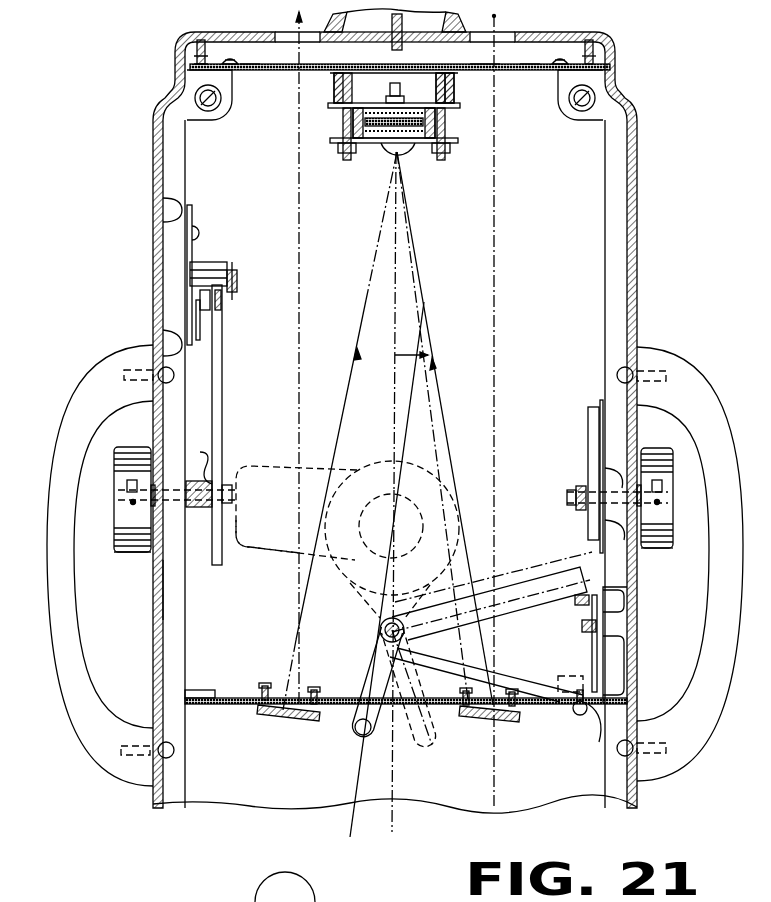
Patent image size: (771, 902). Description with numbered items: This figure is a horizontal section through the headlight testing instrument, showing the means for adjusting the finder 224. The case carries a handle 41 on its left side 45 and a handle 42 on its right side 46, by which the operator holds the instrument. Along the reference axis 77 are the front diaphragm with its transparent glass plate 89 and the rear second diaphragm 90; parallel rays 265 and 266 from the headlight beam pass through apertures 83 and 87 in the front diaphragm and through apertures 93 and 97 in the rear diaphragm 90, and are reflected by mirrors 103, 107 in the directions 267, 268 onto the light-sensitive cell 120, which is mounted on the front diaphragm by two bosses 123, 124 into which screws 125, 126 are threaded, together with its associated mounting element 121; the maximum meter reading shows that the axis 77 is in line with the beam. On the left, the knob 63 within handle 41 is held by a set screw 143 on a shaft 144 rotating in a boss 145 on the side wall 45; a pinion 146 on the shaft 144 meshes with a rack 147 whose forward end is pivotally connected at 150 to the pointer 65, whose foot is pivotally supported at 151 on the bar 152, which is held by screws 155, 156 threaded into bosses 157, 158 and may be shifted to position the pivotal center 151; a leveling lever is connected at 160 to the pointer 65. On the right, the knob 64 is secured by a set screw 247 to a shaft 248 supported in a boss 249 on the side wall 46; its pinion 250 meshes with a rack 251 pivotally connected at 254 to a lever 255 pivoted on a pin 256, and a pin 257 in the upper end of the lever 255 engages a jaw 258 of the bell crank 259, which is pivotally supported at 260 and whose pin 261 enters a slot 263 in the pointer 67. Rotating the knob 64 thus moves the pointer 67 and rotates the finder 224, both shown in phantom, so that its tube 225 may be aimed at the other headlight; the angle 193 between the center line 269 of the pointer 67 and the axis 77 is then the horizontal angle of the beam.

The handle 41 is at (56, 440).
The handle 42 is at (708, 394).
The left side 45 is at (160, 588).
The right side 46 is at (632, 584).
The knob 63 is at (118, 542).
The knob 64 is at (672, 550).
The pointer 65 is at (226, 306).
The pointer 67 is at (400, 771).
The reference axis 77 is at (396, 306).
The aperture 83 is at (282, 70).
The aperture 87 is at (502, 72).
The transparent glass plate 89 is at (474, 64).
The second diaphragm 90 is at (222, 704).
The aperture 93 is at (268, 696).
The aperture 97 is at (506, 688).
The mirror 103 is at (292, 722).
The mirror 107 is at (500, 722).
The light-sensitive cell 120 is at (436, 124).
The mounting bolts 121 is at (450, 146).
The boss 123 is at (334, 96).
The boss 124 is at (454, 96).
The screw 125 is at (334, 78).
The screw 126 is at (454, 78).
The set screw 143 is at (128, 520).
The shaft 144 is at (232, 478).
The boss 145 is at (194, 462).
The pinion 146 is at (200, 480).
The rack 147 is at (224, 412).
The pivotal connection 150 is at (194, 298).
The pivotal center 151 is at (228, 268).
The bar 152 is at (193, 250).
The screw 155 is at (196, 322).
The screw 156 is at (194, 232).
The boss 157 is at (180, 332).
The boss 158 is at (176, 210).
The connection 160 is at (238, 286).
The angle 193 is at (398, 352).
The finder 224 is at (382, 460).
The tube 225 is at (270, 556).
The set screw 247 is at (673, 520).
The shaft 248 is at (568, 500).
The boss 249 is at (606, 478).
The pinion 250 is at (608, 528).
The rack 251 is at (588, 432).
The pivotal connection 254 is at (572, 600).
The lever 255 is at (594, 646).
The pin 256 is at (580, 626).
The pin 257 is at (594, 735).
The jaw 258 is at (572, 708).
The bell crank 259 is at (472, 656).
The pivot 260 is at (380, 630).
The pin 261 is at (355, 738).
The slot 263 is at (354, 758).
The parallel ray 265 is at (298, 14).
The parallel ray 266 is at (496, 14).
The direction 267 is at (368, 292).
The direction 268 is at (424, 302).
The center line 269 is at (418, 404).